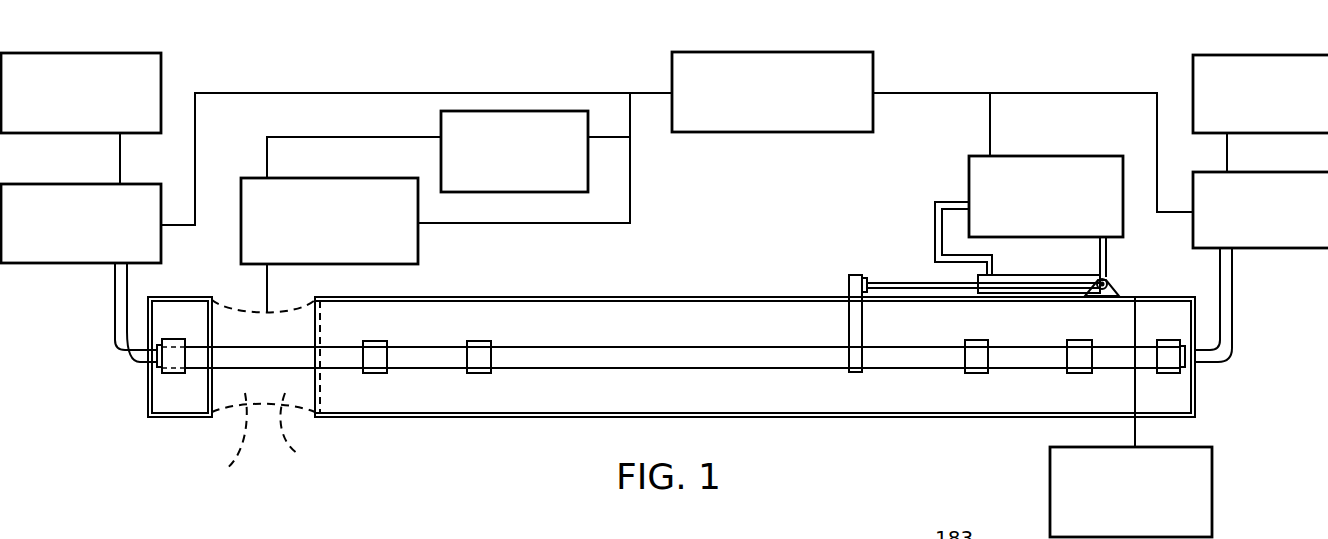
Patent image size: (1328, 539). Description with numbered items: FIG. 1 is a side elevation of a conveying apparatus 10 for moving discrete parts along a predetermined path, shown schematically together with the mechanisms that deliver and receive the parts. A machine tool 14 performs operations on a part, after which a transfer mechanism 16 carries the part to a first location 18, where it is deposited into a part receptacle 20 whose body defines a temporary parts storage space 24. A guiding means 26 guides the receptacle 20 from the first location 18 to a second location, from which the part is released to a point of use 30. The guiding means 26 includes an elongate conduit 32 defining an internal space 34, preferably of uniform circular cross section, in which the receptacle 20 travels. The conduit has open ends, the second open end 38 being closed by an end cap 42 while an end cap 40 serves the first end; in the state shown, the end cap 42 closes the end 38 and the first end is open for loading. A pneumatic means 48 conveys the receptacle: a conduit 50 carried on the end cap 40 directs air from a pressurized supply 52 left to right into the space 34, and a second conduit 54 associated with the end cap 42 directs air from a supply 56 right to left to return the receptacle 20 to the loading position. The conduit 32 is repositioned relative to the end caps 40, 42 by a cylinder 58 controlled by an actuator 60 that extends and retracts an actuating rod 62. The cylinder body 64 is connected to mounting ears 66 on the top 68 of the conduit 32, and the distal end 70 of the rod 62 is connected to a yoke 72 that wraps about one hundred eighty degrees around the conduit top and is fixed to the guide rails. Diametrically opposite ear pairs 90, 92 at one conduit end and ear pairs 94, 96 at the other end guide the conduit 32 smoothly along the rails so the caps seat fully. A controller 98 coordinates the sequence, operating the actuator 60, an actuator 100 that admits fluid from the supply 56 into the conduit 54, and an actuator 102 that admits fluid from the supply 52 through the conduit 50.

The conveying apparatus 10 is at (840, 226).
The machine tool 14 is at (502, 190).
The transfer mechanism 16 is at (318, 257).
The first location 18 is at (267, 314).
The part receptacle 20 is at (305, 436).
The temporary parts storage space 24 is at (217, 447).
The guiding means 26 is at (560, 297).
The point of use 30 is at (1119, 528).
The elongate conduit 32 is at (448, 298).
The internal space 34 is at (757, 325).
The second open end 38 is at (1130, 397).
The end cap 40 is at (175, 418).
The end cap 42 is at (1190, 418).
The pneumatic means 48 is at (120, 356).
The conduit 50 is at (115, 318).
The pressurized supply 52 is at (68, 116).
The second conduit 54 is at (1233, 297).
The supply 56 is at (1251, 118).
The cylinder 58 is at (1028, 280).
The actuator 60 is at (1034, 223).
The actuating rod 62 is at (915, 283).
The cylinder body 64 is at (1060, 290).
The mounting ears 66 is at (1110, 285).
The top of the conduit 68 is at (812, 292).
The distal end 70 is at (873, 282).
The yoke 72 is at (862, 325).
The ear pair 90 is at (372, 373).
The ear pair 92 is at (479, 373).
The ear pair 94 is at (975, 373).
The ear pair 96 is at (1077, 373).
The controller 98 is at (760, 116).
The actuator 100 is at (1247, 236).
The actuator 102 is at (64, 253).